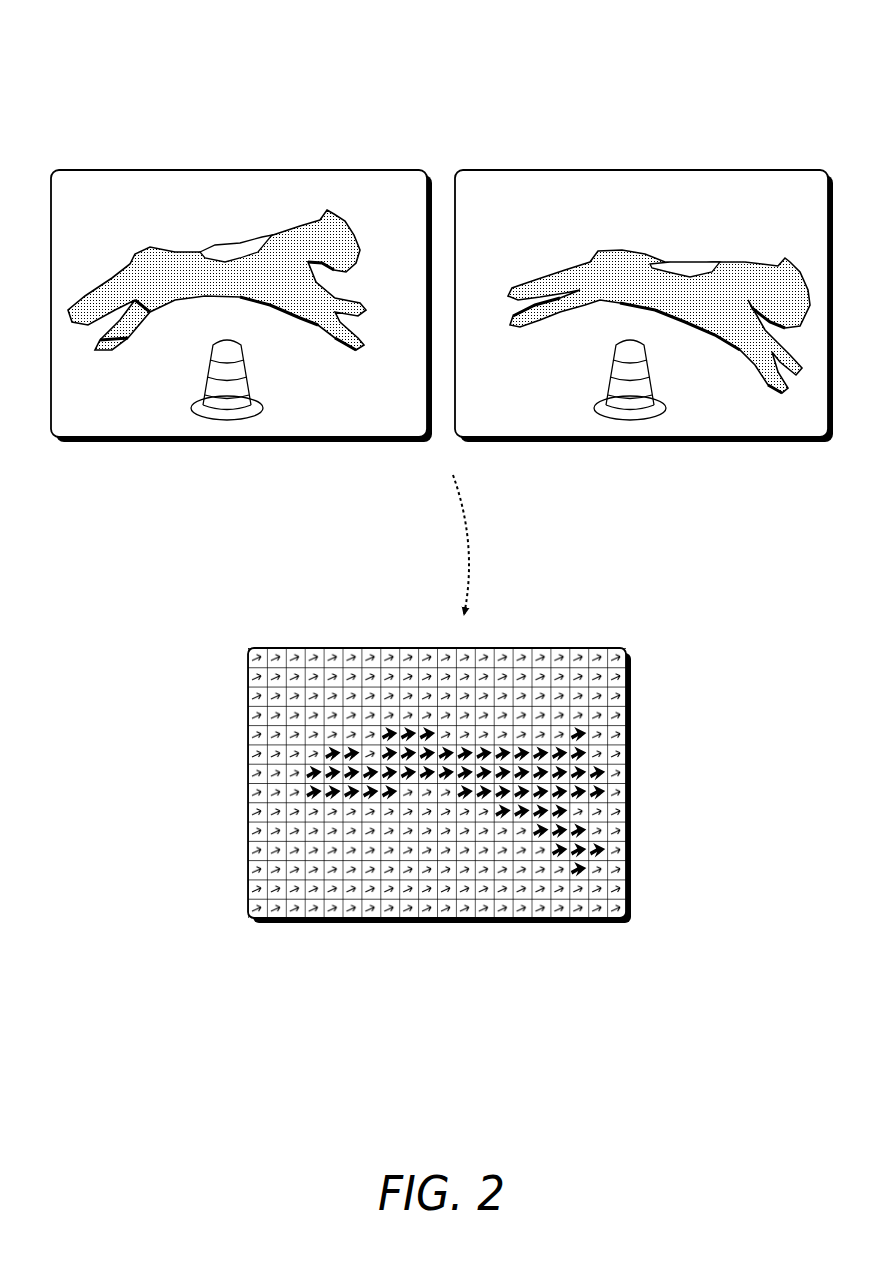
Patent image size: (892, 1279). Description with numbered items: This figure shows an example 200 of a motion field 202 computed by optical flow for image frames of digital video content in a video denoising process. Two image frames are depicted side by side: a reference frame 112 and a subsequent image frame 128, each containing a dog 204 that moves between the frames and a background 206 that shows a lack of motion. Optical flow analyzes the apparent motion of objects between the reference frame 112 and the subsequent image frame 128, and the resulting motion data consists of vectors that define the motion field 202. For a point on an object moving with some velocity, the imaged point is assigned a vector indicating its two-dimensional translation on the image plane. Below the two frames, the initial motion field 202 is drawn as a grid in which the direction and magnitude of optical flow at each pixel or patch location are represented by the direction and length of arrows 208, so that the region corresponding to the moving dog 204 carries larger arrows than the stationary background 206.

The example 200 is at (642, 72).
The reference frame 112 is at (160, 480).
The subsequent image frame 128 is at (587, 480).
The motion field 202 is at (338, 612).
The dog 204 is at (205, 240).
The background 206 is at (396, 410).
The arrows 208 is at (525, 672).